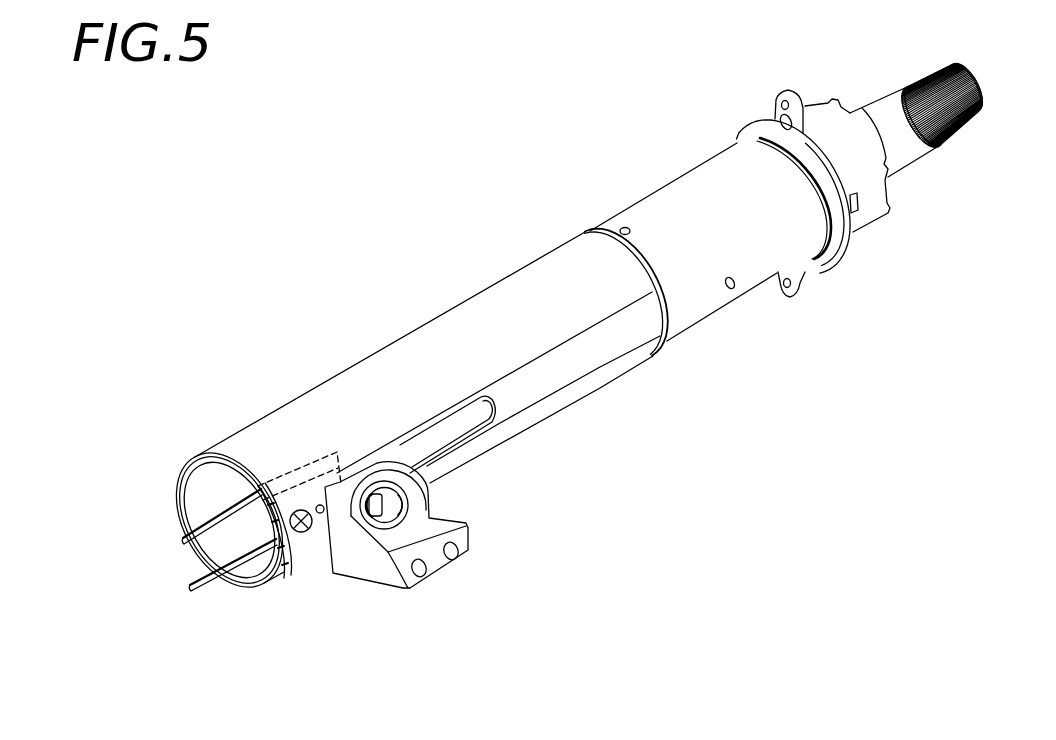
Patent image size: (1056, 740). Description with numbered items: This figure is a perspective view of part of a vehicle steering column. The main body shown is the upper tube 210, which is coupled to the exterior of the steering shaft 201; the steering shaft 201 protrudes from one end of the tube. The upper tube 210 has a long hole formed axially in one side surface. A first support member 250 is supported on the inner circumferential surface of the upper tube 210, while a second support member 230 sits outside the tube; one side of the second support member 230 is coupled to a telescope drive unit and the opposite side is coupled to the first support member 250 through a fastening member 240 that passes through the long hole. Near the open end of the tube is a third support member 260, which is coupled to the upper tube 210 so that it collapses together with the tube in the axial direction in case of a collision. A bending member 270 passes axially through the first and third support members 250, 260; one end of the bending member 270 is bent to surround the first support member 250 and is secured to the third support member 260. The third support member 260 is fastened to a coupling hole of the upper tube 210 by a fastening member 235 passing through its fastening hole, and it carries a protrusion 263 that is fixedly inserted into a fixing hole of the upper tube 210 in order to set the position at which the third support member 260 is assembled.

The upper tube 210 is at (453, 203).
The steering shaft 201 is at (908, 148).
The second support member 230 is at (438, 530).
The fastening member 235 is at (308, 533).
The fastening member 240 is at (380, 498).
The first support member 250 is at (313, 457).
The third support member 260 is at (274, 488).
The protrusion 263 is at (322, 493).
The bending member 270 is at (208, 584).